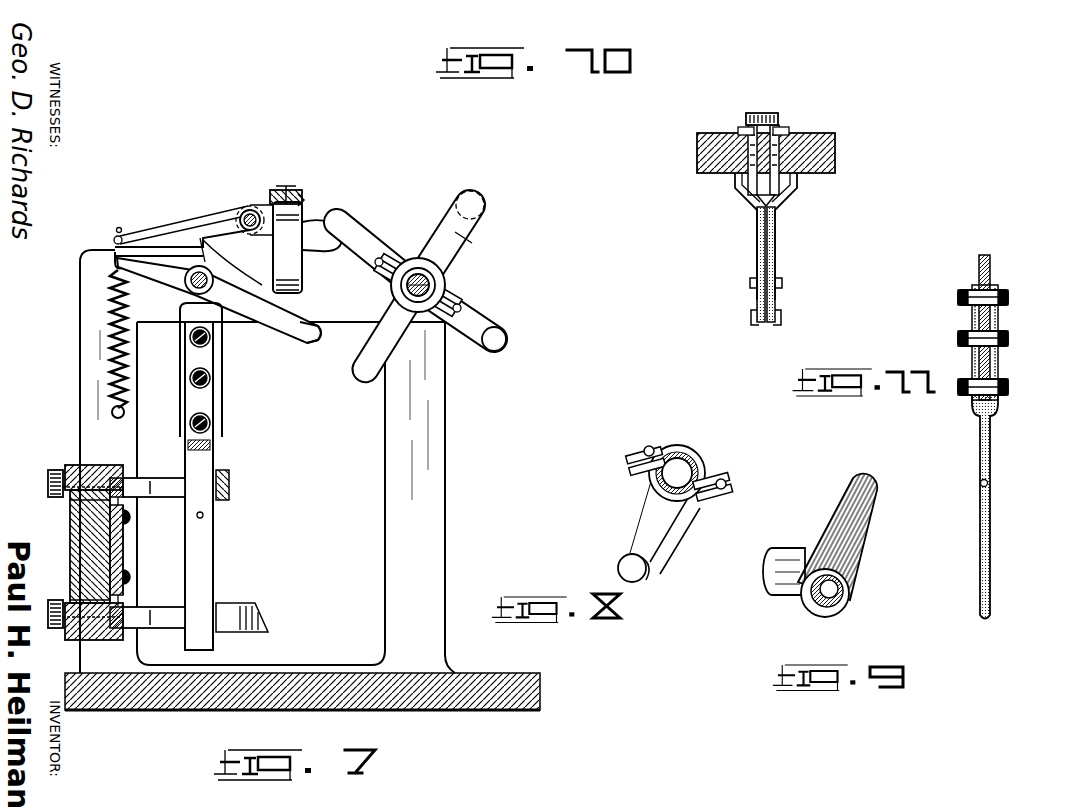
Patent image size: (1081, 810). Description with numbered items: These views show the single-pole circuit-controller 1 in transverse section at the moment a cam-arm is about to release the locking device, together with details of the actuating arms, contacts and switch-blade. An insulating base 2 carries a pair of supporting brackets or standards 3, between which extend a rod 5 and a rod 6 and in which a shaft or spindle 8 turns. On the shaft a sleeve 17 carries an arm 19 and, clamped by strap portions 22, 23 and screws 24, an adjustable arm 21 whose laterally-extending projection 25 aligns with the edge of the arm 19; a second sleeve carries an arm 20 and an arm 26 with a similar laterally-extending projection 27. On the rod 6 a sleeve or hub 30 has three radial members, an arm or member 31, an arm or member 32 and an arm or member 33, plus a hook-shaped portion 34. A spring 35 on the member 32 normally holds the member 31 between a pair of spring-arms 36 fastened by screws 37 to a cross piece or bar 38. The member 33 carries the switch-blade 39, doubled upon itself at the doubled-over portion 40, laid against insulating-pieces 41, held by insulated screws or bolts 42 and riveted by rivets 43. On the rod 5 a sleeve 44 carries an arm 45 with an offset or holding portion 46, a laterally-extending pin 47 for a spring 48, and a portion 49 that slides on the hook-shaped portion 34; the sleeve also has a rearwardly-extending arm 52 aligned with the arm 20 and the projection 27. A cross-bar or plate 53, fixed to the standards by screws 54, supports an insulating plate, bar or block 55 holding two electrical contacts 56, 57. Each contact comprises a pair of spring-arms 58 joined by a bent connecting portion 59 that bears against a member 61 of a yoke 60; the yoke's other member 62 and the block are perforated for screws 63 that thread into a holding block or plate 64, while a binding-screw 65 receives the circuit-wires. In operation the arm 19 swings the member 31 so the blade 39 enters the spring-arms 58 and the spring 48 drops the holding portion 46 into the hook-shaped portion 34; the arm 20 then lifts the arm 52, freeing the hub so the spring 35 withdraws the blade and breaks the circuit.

In FIG. 7, the single-pole circuit-controller 1 is at (451, 490).
In FIG. 7, the base 2 is at (456, 700).
In FIG. 7, the supporting bracket or standard 3 is at (80, 325).
In FIG. 7, the rod 5 is at (243, 210).
In FIG. 7, the rod 6 is at (188, 290).
In FIG. 7, the shaft or spindle 8 is at (436, 279).
In FIG. 7, the sleeve 17 is at (432, 287).
In FIG. 9, the sleeve 17 is at (780, 555).
In FIG. 7, the arm 19 is at (364, 376).
In FIG. 9, the arm 19 is at (850, 538).
In FIG. 7, the arm 20 is at (360, 226).
In FIG. 7, the arm 21 is at (462, 236).
In FIG. 8, the arm 21 is at (664, 535).
In FIG. 7, the strap portion 22 is at (417, 260).
In FIG. 8, the strap portion 22 is at (645, 485).
In FIG. 7, the strap portion 23 is at (404, 304).
In FIG. 8, the strap portion 23 is at (700, 452).
In FIG. 7, the screw 24 is at (352, 320).
In FIG. 8, the screw 24 is at (651, 447).
In FIG. 7, the laterally-extending projection 25 is at (476, 192).
In FIG. 8, the laterally-extending projection 25 is at (618, 565).
In FIG. 7, the arm 26 is at (486, 312).
In FIG. 7, the laterally-extending projection 27 is at (508, 336).
In FIG. 7, the sleeve or hub 30 is at (208, 284).
In FIG. 7, the arm or member 31 is at (308, 338).
In FIG. 7, the arm or member 32 is at (142, 266).
In FIG. 7, the arm or member 33 is at (222, 398).
In FIG. 11, the arm or member 33 is at (992, 268).
In FIG. 7, the hook-shaped portion 34 is at (206, 243).
In FIG. 7, the spring 35 is at (128, 355).
In FIG. 7, the spring-arm 36 is at (303, 276).
In FIG. 7, the screw 37 is at (292, 190).
In FIG. 7, the cross piece or bar 38 is at (304, 202).
In FIG. 7, the switch-blade 39 is at (216, 588).
In FIG. 11, the switch-blade 39 is at (1008, 585).
In FIG. 7, the doubled-over portion 40 is at (214, 556).
In FIG. 11, the doubled-over portion 40 is at (992, 525).
In FIG. 11, the insulating-piece 41 is at (999, 326).
In FIG. 7, the insulated screw or bolt 42 is at (210, 340).
In FIG. 11, the insulated screw or bolt 42 is at (962, 299).
In FIG. 7, the rivet 43 is at (204, 515).
In FIG. 11, the rivet 43 is at (980, 484).
In FIG. 7, the sleeve 44 is at (253, 210).
In FIG. 7, the arm 45 is at (155, 232).
In FIG. 7, the offset or holding portion 46 is at (203, 240).
In FIG. 7, the laterally-extending pin 47 is at (118, 228).
In FIG. 7, the spring 48 is at (114, 241).
In FIG. 7, the portion of arm 49 is at (176, 236).
In FIG. 7, the rearwardly-extending arm 52 is at (320, 238).
In FIG. 7, the cross-bar or plate 53 is at (80, 568).
In FIG. 7, the screw 54 is at (124, 560).
In FIG. 7, the insulating plate, bar or block 55 is at (70, 545).
In FIG. 10, the insulating plate, bar or block 55 is at (836, 142).
In FIG. 7, the electrical contact 56 is at (243, 478).
In FIG. 10, the electrical contact 56 is at (784, 273).
In FIG. 7, the electrical contact 57 is at (263, 613).
In FIG. 10, the electrical contact 57 is at (786, 320).
In FIG. 7, the spring-arm 58 is at (154, 552).
In FIG. 10, the spring-arm 58 is at (777, 248).
In FIG. 7, the connecting portion 59 is at (126, 478).
In FIG. 10, the connecting portion 59 is at (786, 190).
In FIG. 7, the yoke 60 is at (98, 465).
In FIG. 7, the yoke member 61 is at (118, 475).
In FIG. 10, the yoke member 61 is at (735, 180).
In FIG. 7, the yoke member 62 is at (68, 468).
In FIG. 10, the yoke member 62 is at (777, 130).
In FIG. 7, the screw 63 is at (70, 512).
In FIG. 10, the screw 63 is at (722, 133).
In FIG. 7, the holding block or plate 64 is at (130, 518).
In FIG. 10, the holding block or plate 64 is at (760, 200).
In FIG. 7, the binding-screw 65 is at (48, 477).
In FIG. 10, the binding-screw 65 is at (765, 113).